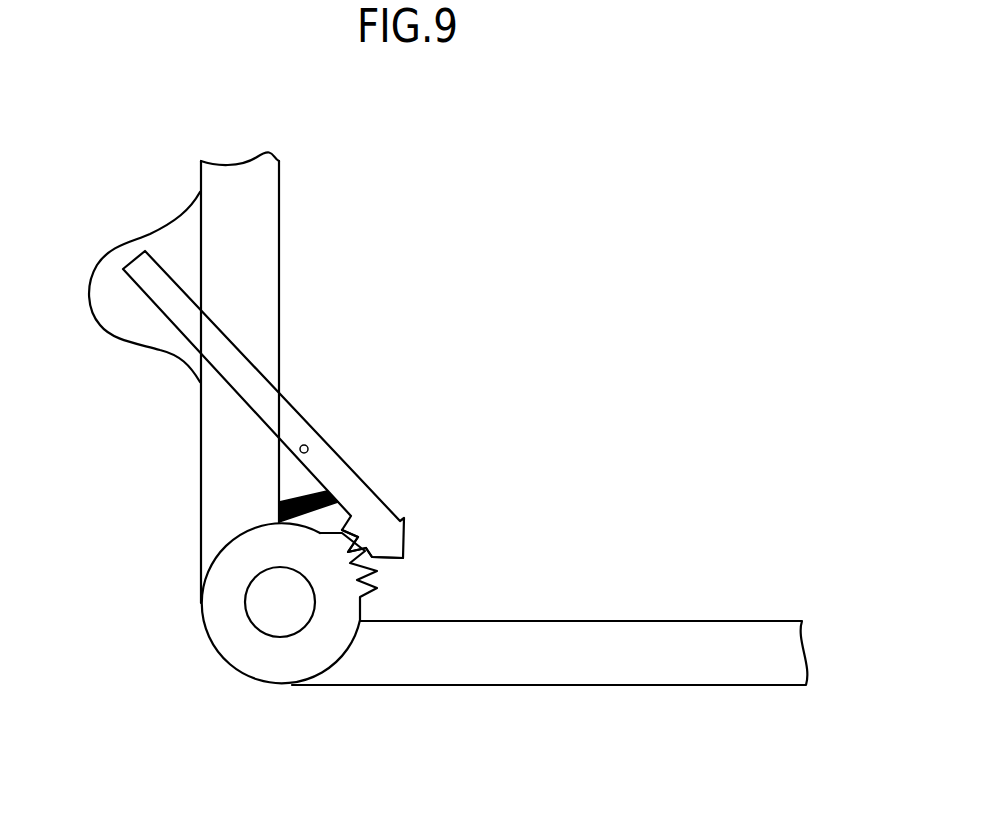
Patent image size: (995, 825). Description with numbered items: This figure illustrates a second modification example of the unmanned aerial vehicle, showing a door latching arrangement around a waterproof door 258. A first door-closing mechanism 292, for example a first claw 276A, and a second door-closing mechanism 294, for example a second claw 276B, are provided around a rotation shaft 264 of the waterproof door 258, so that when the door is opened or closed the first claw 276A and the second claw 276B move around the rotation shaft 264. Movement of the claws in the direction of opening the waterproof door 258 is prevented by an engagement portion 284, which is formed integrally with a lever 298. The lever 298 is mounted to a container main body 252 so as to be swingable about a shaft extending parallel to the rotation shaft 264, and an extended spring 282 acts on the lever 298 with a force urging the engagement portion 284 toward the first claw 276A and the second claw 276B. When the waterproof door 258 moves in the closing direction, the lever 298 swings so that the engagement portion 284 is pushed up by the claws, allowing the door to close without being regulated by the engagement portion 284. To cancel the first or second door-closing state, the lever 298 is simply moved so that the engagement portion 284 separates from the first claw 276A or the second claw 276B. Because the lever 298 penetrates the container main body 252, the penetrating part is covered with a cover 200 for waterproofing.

The cover 200 is at (127, 237).
The container main body 252 is at (201, 433).
The waterproof door 258 is at (580, 665).
The rotation shaft 264 is at (280, 626).
The first claw 276A is at (419, 491).
The second claw 276B is at (437, 513).
The extended spring 282 is at (279, 498).
The engagement portion 284 is at (373, 560).
The first door-closing mechanism 292 is at (342, 531).
The second door-closing mechanism 294 is at (355, 548).
The lever 298 is at (285, 416).